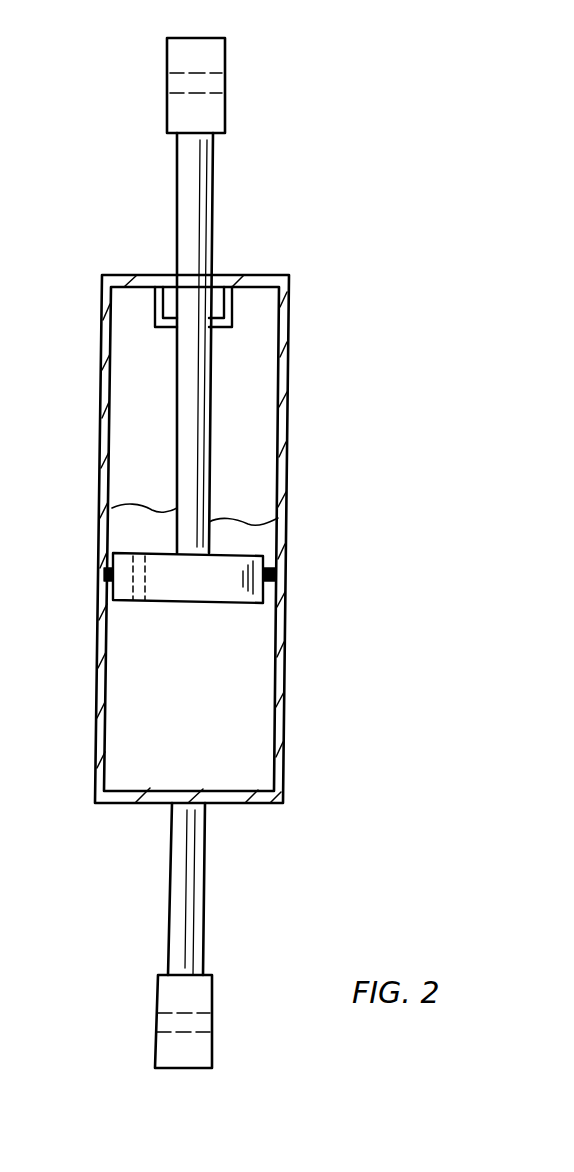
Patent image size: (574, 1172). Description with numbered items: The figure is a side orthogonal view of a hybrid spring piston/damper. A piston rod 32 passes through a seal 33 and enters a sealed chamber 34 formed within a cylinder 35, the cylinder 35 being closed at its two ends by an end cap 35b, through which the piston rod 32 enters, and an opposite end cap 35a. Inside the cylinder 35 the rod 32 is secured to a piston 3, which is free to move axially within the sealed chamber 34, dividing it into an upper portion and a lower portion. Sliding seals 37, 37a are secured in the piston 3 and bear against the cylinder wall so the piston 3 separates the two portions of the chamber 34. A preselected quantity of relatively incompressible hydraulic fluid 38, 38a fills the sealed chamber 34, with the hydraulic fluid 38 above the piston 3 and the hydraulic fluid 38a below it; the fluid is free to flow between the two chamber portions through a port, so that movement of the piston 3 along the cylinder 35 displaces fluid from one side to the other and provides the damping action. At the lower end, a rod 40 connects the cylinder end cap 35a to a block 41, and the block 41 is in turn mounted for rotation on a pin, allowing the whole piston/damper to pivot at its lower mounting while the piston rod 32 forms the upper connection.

The piston 3 is at (160, 611).
The piston rod 32 is at (212, 240).
The seal 33 is at (232, 313).
The sealed chamber 34 is at (253, 383).
The cylinder 35 is at (287, 452).
The end cap 35a is at (184, 819).
The end cap 35b is at (163, 264).
The sliding seal 37 is at (277, 566).
The sliding seal 37a is at (104, 575).
The hydraulic fluid 38 is at (255, 540).
The hydraulic fluid 38a is at (252, 670).
The rod 40 is at (205, 912).
The block 41 is at (213, 997).